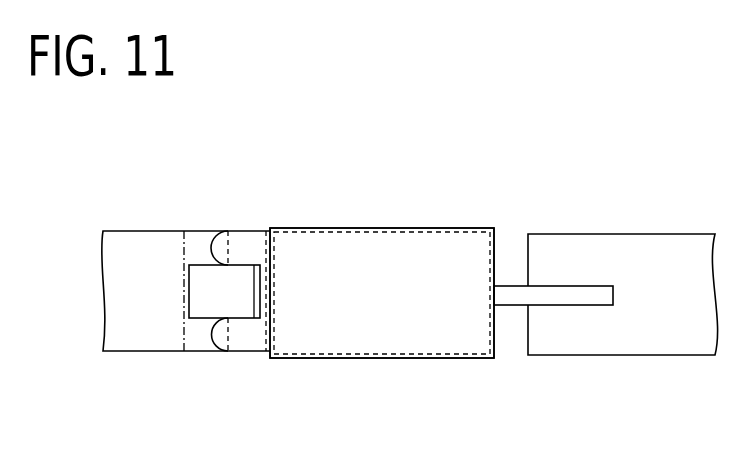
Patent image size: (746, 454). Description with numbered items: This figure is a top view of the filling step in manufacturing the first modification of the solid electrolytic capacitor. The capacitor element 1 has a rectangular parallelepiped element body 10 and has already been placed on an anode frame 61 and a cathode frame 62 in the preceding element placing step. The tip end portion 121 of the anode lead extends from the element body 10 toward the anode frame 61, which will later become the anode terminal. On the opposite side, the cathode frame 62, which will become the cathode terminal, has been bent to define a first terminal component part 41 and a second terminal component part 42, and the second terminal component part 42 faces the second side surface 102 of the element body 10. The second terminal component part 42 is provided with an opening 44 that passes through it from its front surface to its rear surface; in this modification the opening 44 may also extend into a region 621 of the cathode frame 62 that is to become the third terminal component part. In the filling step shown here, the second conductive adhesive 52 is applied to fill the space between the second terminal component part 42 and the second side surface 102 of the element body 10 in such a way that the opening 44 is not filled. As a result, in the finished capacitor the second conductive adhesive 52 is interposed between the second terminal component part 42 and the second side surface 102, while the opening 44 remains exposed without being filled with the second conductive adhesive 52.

The capacitor element 1 is at (496, 222).
The element body 10 is at (382, 298).
The first terminal component part 41 is at (378, 358).
The second terminal component part 42 is at (248, 340).
The opening 44 is at (206, 300).
The second conductive adhesive 52 is at (249, 247).
The anode frame 61 is at (673, 243).
The cathode frame 62 is at (153, 243).
The second side surface 102 is at (265, 339).
The tip end portion 121 is at (575, 292).
The region of the cathode frame 621 is at (200, 243).